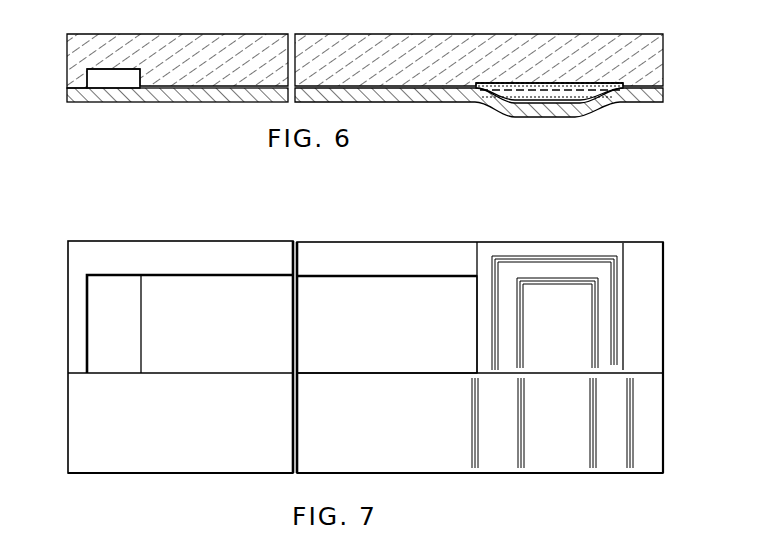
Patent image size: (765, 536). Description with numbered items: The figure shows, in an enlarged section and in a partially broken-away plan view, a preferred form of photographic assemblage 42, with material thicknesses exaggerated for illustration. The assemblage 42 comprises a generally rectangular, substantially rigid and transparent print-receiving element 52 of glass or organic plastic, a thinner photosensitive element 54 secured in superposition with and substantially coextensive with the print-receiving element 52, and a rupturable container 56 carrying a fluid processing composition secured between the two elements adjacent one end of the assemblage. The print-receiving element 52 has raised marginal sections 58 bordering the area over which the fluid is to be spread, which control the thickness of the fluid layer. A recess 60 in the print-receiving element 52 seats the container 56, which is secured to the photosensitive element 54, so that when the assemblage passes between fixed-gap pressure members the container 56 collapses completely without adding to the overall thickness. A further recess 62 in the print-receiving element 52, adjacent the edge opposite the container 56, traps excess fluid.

In FIG. 6, the photographic assemblage 42 is at (183, 103).
In FIG. 7, the photographic assemblage 42 is at (68, 430).
In FIG. 6, the print-receiving element 52 is at (349, 38).
In FIG. 7, the print-receiving element 52 is at (387, 324).
In FIG. 6, the photosensitive element 54 is at (405, 100).
In FIG. 7, the photosensitive element 54 is at (480, 420).
In FIG. 6, the rupturable container 56 is at (578, 100).
In FIG. 7, the rupturable container 56 is at (557, 306).
In FIG. 7, the raised marginal sections 58 is at (370, 253).
In FIG. 6, the recess 60 is at (585, 82).
In FIG. 6, the recess 62 is at (103, 70).
In FIG. 7, the recess 62 is at (100, 312).